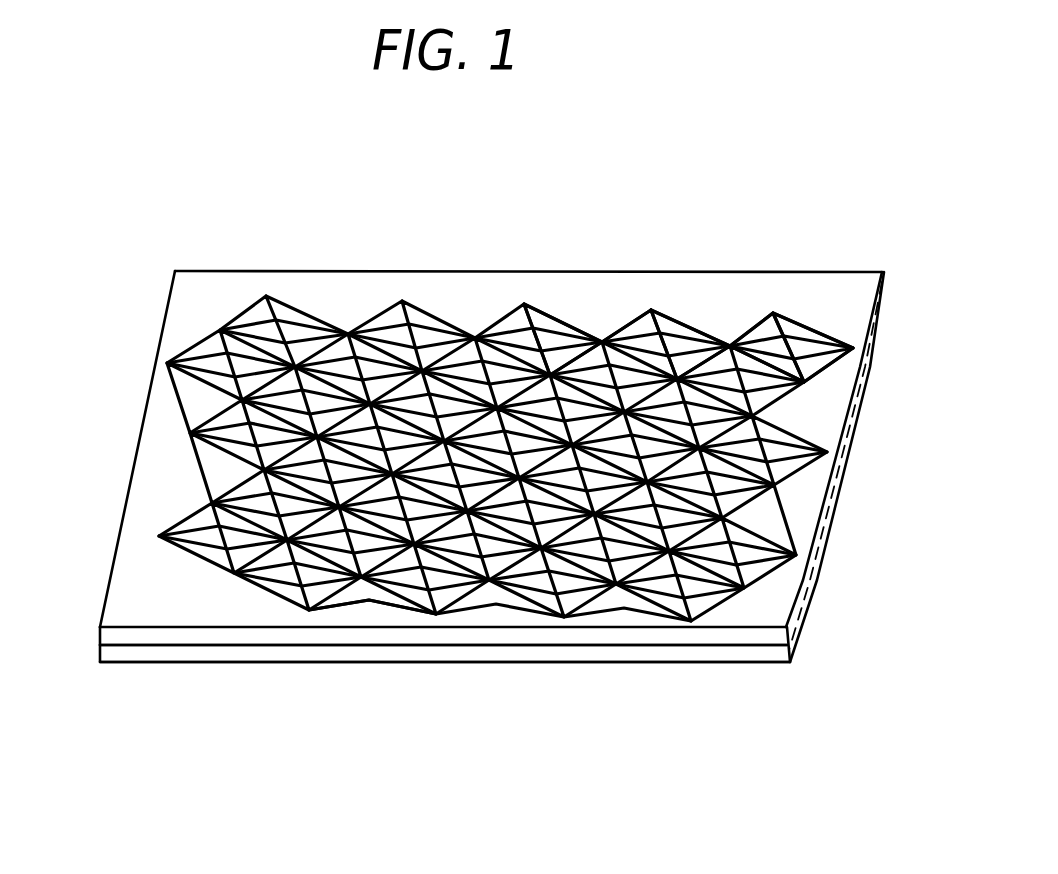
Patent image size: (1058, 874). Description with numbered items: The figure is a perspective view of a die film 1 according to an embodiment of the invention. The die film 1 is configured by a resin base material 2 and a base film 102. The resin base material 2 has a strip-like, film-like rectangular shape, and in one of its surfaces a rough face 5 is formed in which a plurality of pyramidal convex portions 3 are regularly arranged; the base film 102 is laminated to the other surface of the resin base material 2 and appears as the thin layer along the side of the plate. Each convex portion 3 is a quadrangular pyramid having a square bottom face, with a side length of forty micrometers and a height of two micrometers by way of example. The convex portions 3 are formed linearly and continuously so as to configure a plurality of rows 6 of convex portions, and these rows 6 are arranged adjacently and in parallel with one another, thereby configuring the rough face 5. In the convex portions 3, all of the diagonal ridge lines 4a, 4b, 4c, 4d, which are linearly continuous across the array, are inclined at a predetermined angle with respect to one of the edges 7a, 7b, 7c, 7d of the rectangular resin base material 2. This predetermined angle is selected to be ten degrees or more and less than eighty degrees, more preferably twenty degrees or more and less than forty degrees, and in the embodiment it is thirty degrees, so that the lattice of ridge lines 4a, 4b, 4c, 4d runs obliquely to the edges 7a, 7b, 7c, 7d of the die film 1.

The die film 1 is at (881, 160).
The base film 102 is at (886, 313).
The resin base material 2 is at (592, 287).
The convex portion 3 is at (818, 358).
The diagonal ridge line 4a is at (663, 325).
The diagonal ridge line 4b is at (688, 327).
The diagonal ridge line 4c is at (637, 332).
The diagonal ridge line 4d is at (667, 360).
The rough face 5 is at (363, 600).
The row of convex portions 6 is at (796, 323).
The edge of resin base material 7a is at (455, 271).
The edge of resin base material 7b is at (138, 442).
The edge of resin base material 7c is at (462, 640).
The edge of resin base material 7d is at (838, 481).